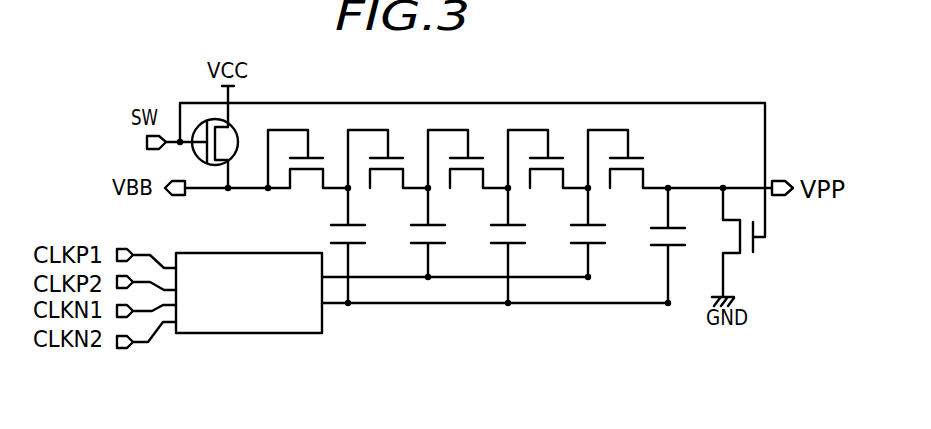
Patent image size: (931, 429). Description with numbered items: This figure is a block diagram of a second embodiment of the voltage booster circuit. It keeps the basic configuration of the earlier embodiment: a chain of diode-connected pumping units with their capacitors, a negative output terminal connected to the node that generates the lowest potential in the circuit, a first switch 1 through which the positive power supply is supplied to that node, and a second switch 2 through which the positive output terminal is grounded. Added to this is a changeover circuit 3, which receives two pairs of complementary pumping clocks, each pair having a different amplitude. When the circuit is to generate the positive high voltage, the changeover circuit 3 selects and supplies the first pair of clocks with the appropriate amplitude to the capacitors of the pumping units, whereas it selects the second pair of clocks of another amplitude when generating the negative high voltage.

The first switch 1 is at (237, 128).
The second switch 2 is at (747, 257).
The changeover circuit 3 is at (267, 333).